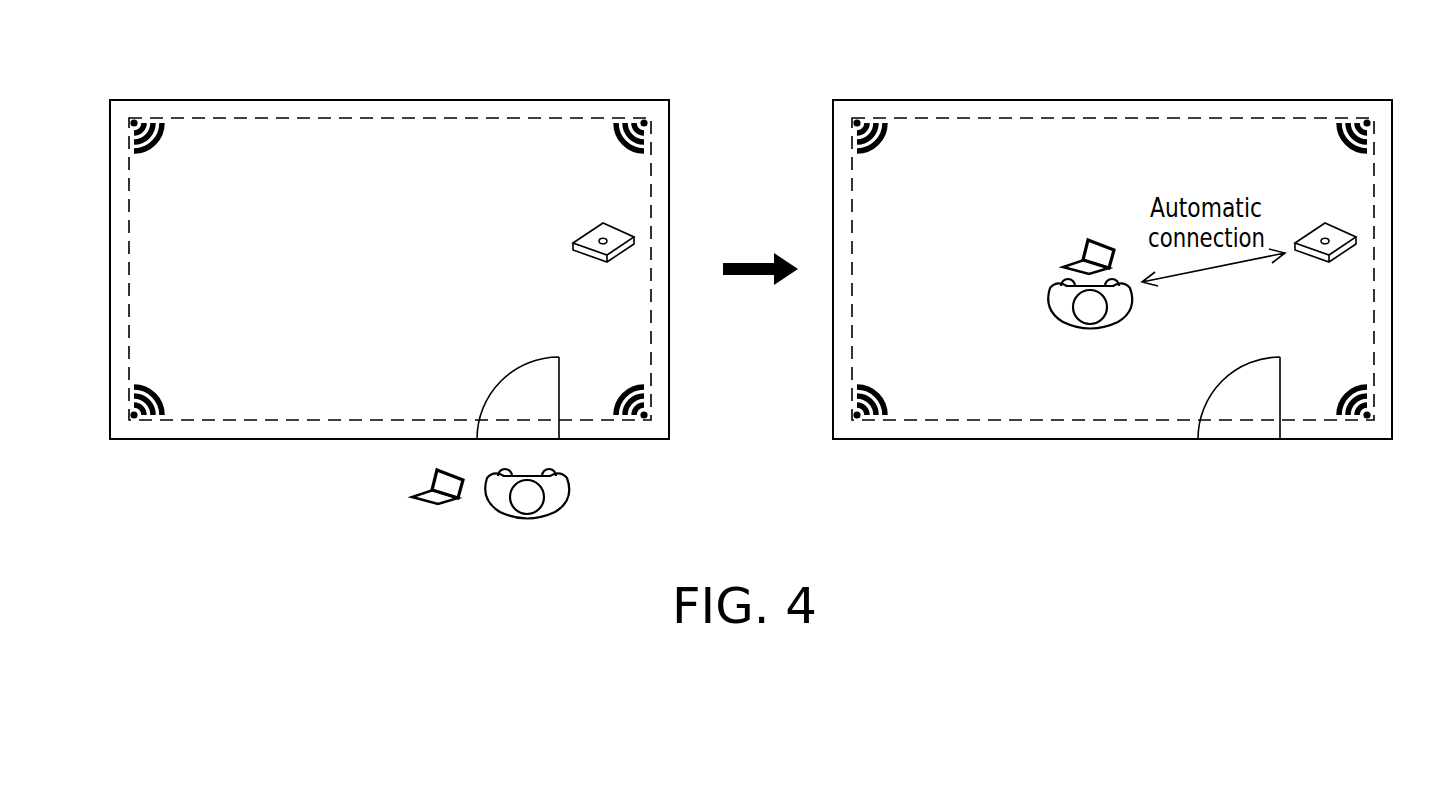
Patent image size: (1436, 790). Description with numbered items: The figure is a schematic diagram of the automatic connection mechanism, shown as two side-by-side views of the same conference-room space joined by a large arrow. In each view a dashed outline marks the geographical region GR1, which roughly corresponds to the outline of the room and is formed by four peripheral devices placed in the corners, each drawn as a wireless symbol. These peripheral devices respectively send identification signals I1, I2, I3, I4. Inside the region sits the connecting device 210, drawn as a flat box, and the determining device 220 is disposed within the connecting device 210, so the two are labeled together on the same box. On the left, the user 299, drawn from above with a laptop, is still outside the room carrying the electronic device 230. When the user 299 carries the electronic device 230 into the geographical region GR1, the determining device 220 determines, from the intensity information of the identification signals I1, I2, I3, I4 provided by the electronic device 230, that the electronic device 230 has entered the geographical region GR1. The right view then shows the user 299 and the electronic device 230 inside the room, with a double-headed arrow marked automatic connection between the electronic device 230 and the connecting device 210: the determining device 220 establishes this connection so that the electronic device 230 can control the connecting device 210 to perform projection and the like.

The geographical region GR1 is at (356, 117).
The identification signal I1 is at (160, 153).
The identification signal I2 is at (160, 385).
The identification signal I3 is at (619, 385).
The identification signal I4 is at (619, 153).
The connecting device 210 is at (950, 273).
The determining device 220 is at (576, 250).
The electronic device 230 is at (432, 488).
The user 299 is at (568, 498).